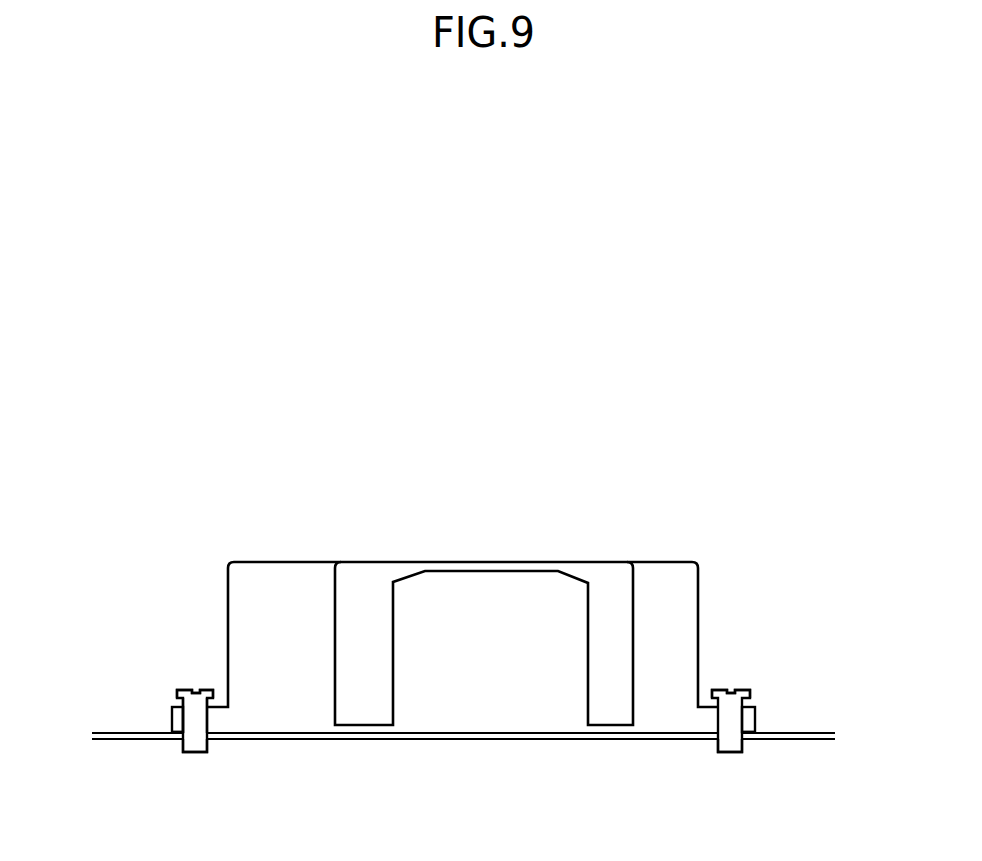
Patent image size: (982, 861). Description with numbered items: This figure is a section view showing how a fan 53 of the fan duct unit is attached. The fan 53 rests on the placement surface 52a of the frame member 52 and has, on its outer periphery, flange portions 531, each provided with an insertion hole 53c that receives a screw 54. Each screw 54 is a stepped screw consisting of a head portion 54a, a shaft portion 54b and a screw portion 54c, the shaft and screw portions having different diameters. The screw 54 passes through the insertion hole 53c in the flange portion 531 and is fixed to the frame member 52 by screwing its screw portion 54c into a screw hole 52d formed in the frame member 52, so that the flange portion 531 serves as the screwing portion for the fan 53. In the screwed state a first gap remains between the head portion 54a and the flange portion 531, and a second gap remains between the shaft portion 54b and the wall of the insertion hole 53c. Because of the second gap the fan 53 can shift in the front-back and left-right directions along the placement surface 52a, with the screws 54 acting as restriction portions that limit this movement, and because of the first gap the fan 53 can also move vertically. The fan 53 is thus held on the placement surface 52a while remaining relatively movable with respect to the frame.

The frame member 52 is at (433, 741).
The placement surface 52a is at (304, 732).
The screw hole 52d is at (183, 742).
The fan 53 is at (493, 592).
The insertion hole 53c is at (171, 724).
The flange portion 531 is at (171, 728).
The screw 54 is at (203, 650).
The head portion 54a is at (190, 690).
The shaft portion 54b is at (210, 716).
The screw portion 54c is at (205, 753).